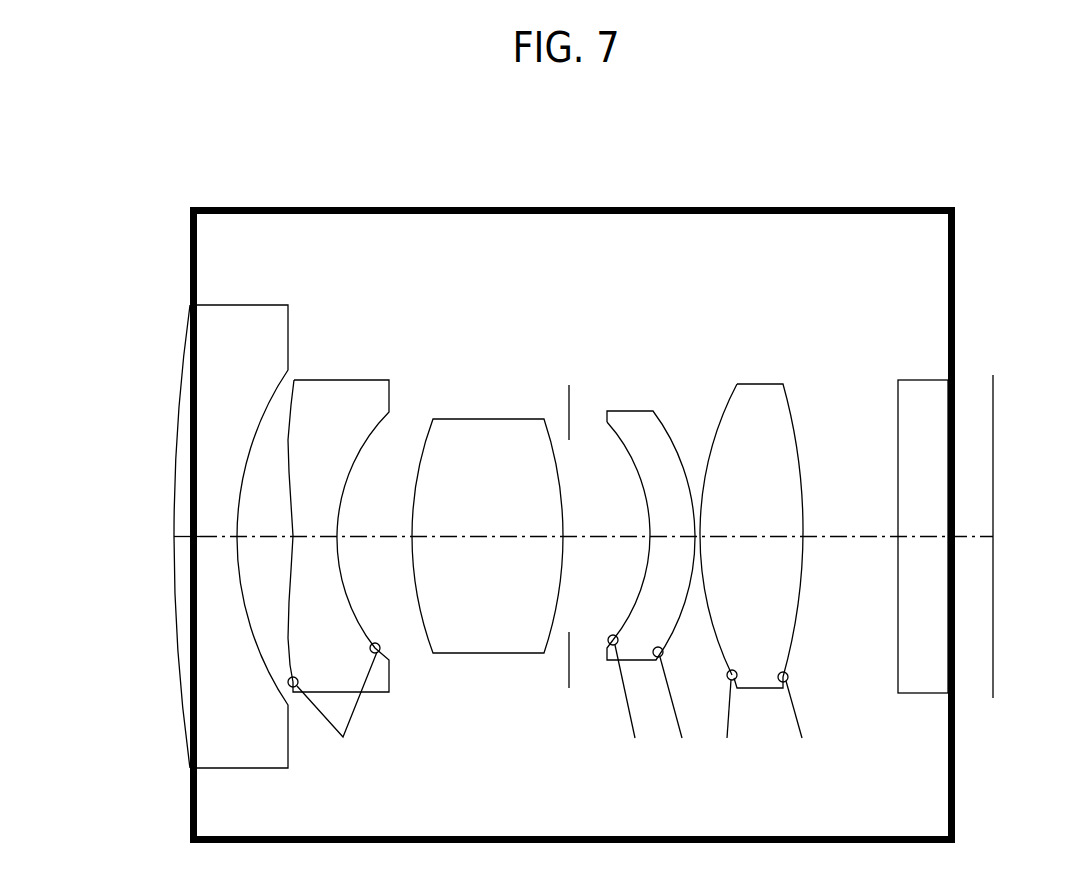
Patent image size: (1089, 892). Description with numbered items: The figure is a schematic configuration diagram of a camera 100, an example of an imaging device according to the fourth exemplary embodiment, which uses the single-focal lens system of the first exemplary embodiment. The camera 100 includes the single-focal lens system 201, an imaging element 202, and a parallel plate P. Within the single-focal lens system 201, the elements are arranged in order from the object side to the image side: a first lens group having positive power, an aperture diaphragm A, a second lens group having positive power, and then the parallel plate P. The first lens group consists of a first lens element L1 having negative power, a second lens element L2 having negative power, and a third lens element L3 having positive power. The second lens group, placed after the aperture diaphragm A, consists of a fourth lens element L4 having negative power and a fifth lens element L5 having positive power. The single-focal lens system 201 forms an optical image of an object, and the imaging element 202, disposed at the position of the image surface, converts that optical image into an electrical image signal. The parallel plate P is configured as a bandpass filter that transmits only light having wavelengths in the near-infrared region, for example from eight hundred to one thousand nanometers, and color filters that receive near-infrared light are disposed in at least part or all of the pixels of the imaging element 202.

The camera 100 is at (107, 164).
The single-focal lens system 201 is at (689, 208).
The imaging element 202 is at (1031, 477).
The first lens element L1 is at (247, 313).
The second lens element L2 is at (332, 400).
The third lens element L3 is at (464, 428).
The aperture diaphragm A is at (597, 471).
The fourth lens element L4 is at (630, 425).
The fifth lens element L5 is at (760, 396).
The parallel plate P is at (914, 392).